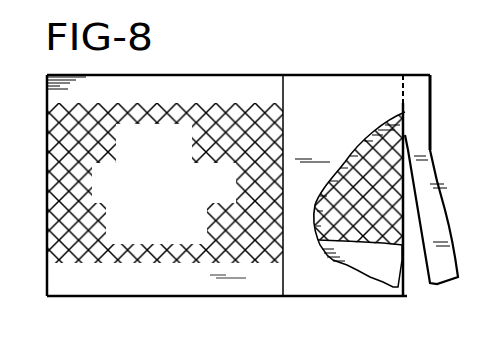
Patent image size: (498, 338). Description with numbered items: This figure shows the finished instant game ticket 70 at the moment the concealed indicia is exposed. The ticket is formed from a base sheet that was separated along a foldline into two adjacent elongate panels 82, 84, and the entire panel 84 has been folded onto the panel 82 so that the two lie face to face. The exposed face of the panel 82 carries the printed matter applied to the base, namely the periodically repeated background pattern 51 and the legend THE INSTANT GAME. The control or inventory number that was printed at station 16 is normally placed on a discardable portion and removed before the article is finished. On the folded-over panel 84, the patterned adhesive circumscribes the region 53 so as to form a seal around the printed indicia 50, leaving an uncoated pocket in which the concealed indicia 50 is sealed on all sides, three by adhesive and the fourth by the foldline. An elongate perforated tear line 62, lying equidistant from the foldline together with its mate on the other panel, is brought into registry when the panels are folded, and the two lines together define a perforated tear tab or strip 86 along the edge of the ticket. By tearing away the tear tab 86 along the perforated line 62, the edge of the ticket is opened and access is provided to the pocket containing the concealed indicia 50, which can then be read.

The printing station 16 is at (344, 188).
The concealed indicia 50 is at (346, 178).
The background pattern 51 is at (173, 255).
The region of background pattern 53 is at (389, 230).
The tear line 62 is at (403, 98).
The instant game ticket 70 is at (225, 66).
The panel 82 is at (78, 97).
The panel 84 is at (325, 87).
The tear tab 86 is at (422, 148).